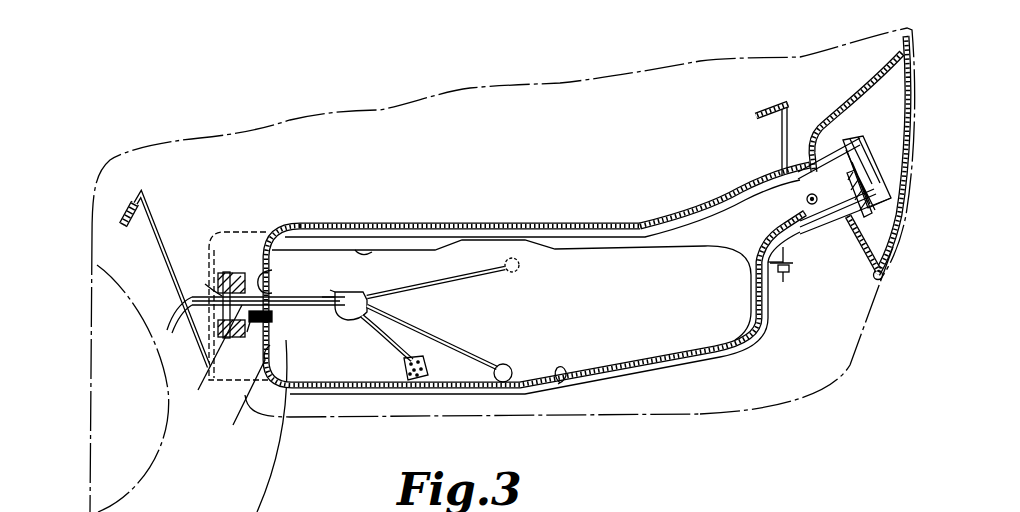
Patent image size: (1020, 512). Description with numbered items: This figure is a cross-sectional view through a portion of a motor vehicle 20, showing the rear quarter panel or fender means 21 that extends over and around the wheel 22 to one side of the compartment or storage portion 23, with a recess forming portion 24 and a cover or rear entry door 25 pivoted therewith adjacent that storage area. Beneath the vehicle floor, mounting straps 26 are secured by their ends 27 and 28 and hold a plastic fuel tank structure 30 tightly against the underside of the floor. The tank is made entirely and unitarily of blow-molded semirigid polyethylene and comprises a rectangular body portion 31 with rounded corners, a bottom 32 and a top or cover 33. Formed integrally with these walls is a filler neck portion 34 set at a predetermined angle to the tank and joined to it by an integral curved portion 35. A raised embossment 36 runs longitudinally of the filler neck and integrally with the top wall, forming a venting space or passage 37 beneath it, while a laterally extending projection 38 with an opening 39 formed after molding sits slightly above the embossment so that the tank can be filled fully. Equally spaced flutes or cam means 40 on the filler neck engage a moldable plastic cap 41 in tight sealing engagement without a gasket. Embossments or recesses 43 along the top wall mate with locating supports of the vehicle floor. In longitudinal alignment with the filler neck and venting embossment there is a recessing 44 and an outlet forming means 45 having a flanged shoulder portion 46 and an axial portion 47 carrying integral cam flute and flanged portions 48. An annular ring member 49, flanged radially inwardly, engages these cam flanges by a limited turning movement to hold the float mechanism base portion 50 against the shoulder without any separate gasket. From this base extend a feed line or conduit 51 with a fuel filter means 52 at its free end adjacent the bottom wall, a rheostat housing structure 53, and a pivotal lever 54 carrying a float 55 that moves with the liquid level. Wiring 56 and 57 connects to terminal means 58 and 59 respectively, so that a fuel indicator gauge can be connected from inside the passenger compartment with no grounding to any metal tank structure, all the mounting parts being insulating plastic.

The motor vehicle 20 is at (790, 408).
The rear quarter panel or fender means 21 is at (622, 413).
The wheel 22 is at (280, 475).
The compartment or storage portion 23 is at (728, 57).
The recess forming portion 24 is at (884, 93).
The cover or rear entry door 25 is at (900, 258).
The mounting straps 26 is at (160, 215).
The strap end 27 is at (128, 200).
The strap end 28 is at (793, 270).
The plastic fuel tank structure 30 is at (548, 222).
The body portion 31 is at (772, 292).
The bottom 32 is at (559, 380).
The top or cover 33 is at (262, 229).
The filler neck portion 34 is at (808, 183).
The integral curved portion 35 is at (672, 221).
The raised or deformed embossment 36 is at (415, 221).
The venting space or passage 37 is at (437, 228).
The laterally extending projection 38 is at (803, 206).
The opening or passage 39 is at (814, 205).
The flutes, flanges or cam means 40 is at (855, 196).
The cover or cap 41 is at (870, 160).
The embossments or recesses 43 is at (363, 253).
The recessing 44 is at (236, 420).
The outlet forming means 45 is at (270, 279).
The flanged shoulder portion 46 is at (271, 336).
The axial portion 47 is at (224, 272).
The cam means or flute and flanged portions 48 is at (234, 274).
The annular ring member 49 is at (199, 389).
The float mechanism base portion 50 is at (273, 314).
The feed line or conduit 51 is at (401, 348).
The fuel filter means 52 is at (428, 367).
The electrical resistance or rheostat housing structure 53 is at (352, 313).
The pivotal lever 54 is at (464, 276).
The float 55 is at (522, 266).
The wiring 56 is at (284, 297).
The wiring 57 is at (333, 291).
The terminal means 58 is at (222, 300).
The terminal means 59 is at (200, 301).